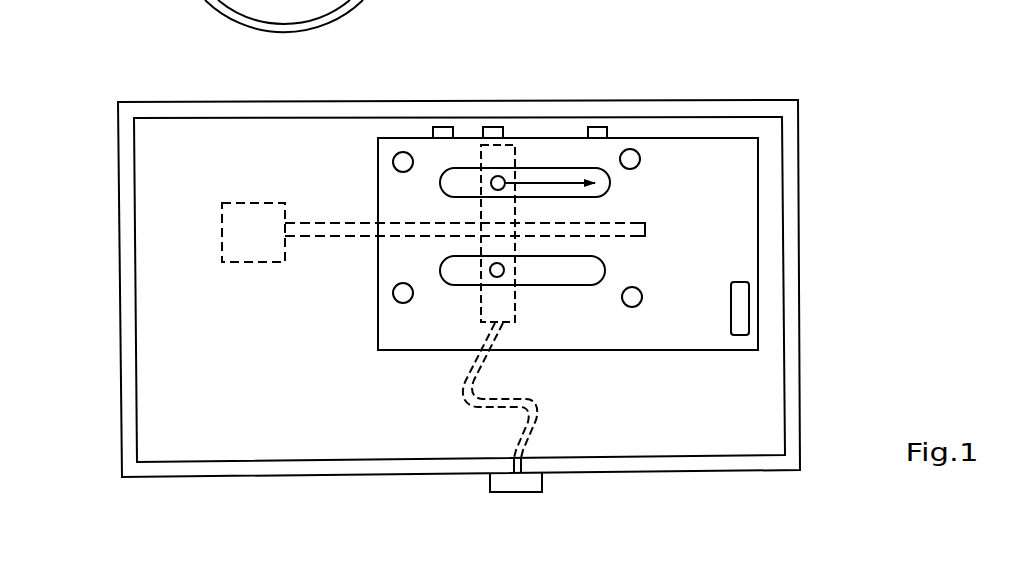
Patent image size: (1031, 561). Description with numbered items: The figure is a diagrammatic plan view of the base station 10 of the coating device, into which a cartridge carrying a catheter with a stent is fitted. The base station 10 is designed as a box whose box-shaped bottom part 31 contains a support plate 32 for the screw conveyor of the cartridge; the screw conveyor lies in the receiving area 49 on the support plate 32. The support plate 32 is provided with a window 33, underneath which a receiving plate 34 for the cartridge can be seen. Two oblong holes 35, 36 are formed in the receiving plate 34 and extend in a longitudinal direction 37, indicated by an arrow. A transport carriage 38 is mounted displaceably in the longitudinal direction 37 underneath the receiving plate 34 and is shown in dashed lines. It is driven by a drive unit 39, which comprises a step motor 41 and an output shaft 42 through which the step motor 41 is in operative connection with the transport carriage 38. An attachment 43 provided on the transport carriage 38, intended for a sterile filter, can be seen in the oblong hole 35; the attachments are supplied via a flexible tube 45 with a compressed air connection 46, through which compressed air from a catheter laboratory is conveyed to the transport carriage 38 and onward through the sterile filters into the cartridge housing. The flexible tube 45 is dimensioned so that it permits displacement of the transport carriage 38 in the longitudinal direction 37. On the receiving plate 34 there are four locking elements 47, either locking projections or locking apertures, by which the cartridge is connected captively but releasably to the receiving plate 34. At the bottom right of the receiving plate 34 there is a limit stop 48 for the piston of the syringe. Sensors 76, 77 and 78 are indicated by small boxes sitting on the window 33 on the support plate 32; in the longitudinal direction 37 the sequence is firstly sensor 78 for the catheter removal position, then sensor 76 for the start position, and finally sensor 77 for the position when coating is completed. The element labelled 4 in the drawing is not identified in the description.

The base station 10 is at (826, 232).
The bottom part 31 is at (793, 352).
The support plate 32 is at (757, 403).
The window 33 is at (758, 178).
The receiving plate 34 is at (722, 242).
The oblong hole 35 is at (576, 270).
The oblong hole 36 is at (540, 175).
The longitudinal direction 37 is at (621, 137).
The transport carriage 38 is at (488, 247).
The drive unit 39 is at (324, 250).
The step motor 41 is at (234, 230).
The output shaft 42 is at (648, 222).
The attachment 43 is at (493, 274).
The flexible tube 45 is at (463, 395).
The compressed air connection 46 is at (535, 478).
The locking elements 47 is at (401, 152).
The limit stop 48 is at (737, 302).
The receiving area 49 is at (222, 428).
The slide element 4 is at (513, 170).
The sensor 76 is at (498, 126).
The sensor 77 is at (603, 126).
The sensor 78 is at (446, 126).